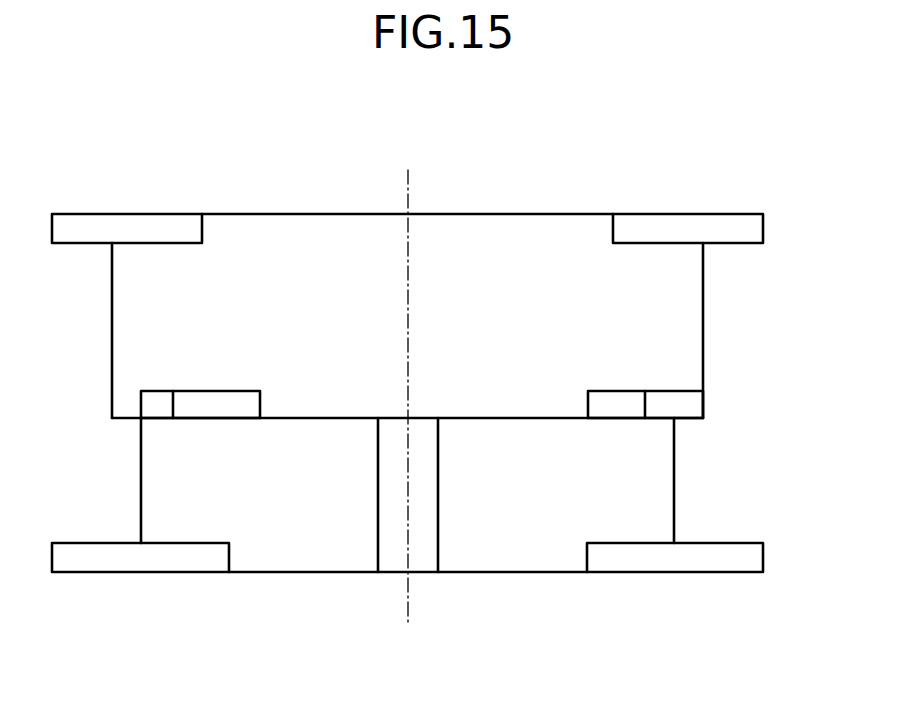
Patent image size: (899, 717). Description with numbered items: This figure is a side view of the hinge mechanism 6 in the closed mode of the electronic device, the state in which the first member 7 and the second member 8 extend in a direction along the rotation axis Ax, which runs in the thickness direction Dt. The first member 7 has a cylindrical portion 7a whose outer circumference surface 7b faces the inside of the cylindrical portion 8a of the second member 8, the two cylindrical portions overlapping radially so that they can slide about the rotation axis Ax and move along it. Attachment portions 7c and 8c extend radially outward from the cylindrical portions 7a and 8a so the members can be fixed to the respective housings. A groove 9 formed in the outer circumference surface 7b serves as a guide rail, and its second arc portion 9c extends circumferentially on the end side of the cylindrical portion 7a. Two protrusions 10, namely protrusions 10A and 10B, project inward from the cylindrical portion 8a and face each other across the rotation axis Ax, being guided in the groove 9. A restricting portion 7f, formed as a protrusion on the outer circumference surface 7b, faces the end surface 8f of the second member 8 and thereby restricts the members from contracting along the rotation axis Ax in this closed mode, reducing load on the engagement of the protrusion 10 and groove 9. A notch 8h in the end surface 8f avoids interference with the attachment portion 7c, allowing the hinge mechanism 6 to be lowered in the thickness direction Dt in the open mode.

The hinge mechanism 6 is at (656, 112).
The first member 7 is at (436, 528).
The cylindrical portion 7a is at (408, 588).
The outer circumference surface 7b is at (518, 557).
The attachment portion 7c is at (88, 564).
The restricting portion 7f is at (432, 525).
The second member 8 is at (407, 282).
The cylindrical portion 8a is at (118, 333).
The attachment portion 8c is at (82, 228).
The end surface 8f is at (464, 421).
The notch 8h is at (260, 398).
The groove 9 is at (422, 356).
The second arc portion 9c is at (212, 400).
The protrusion 10 is at (436, 477).
The protrusion 10A is at (157, 412).
The protrusion 10B is at (658, 422).
The rotation axis Ax is at (410, 185).
The thickness direction Dt is at (789, 292).